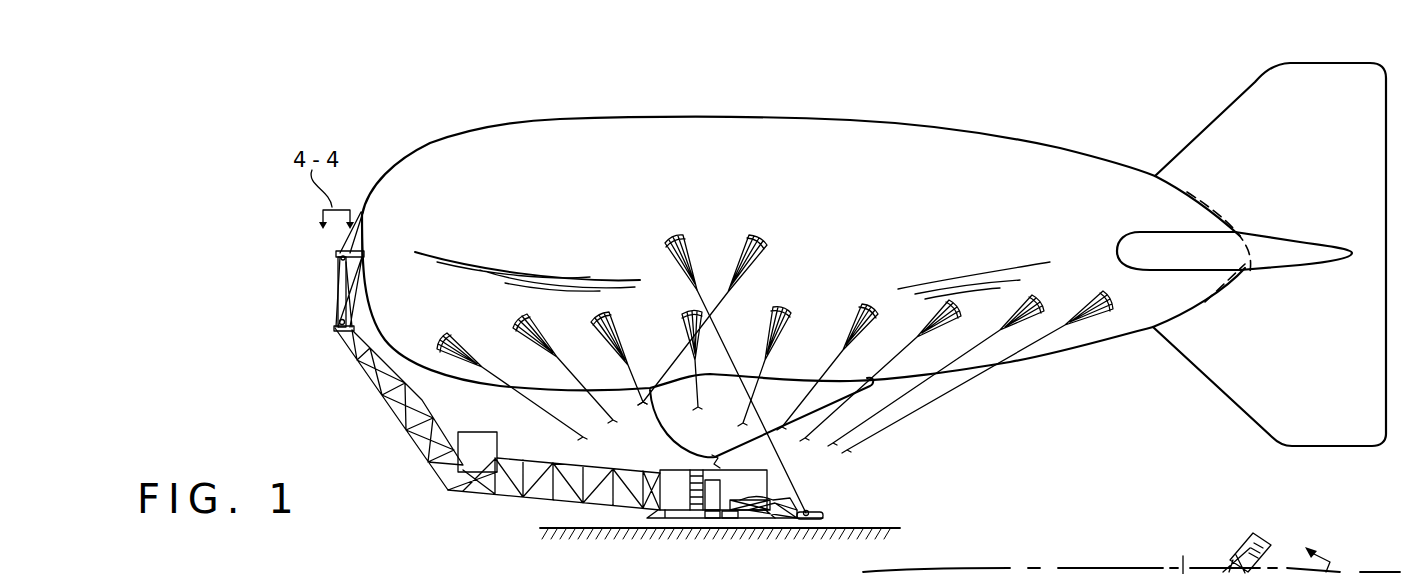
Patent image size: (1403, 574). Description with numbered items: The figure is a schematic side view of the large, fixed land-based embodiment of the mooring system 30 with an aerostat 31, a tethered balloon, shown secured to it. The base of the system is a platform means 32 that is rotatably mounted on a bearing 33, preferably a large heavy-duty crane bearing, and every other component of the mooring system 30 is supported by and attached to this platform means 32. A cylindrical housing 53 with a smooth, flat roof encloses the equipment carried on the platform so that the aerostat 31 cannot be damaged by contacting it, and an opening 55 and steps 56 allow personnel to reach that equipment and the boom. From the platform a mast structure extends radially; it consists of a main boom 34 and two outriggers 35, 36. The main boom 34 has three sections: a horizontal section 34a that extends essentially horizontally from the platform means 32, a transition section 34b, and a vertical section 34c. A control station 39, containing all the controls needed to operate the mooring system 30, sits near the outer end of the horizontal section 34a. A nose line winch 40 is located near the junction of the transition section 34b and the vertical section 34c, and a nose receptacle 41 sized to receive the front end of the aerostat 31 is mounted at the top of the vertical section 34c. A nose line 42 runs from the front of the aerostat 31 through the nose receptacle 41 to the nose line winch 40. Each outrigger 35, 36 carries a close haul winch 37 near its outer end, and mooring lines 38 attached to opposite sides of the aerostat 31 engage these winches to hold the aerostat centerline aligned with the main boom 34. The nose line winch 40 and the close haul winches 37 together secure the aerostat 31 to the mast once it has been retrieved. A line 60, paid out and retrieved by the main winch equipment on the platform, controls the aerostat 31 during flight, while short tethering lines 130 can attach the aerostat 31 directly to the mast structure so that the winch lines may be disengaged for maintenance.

The mooring system 30 is at (340, 383).
The aerostat 31 is at (1023, 163).
The platform means 32 is at (667, 516).
The bearing 33 is at (722, 520).
The main boom 34 is at (468, 495).
The horizontal section 34a is at (540, 503).
The transition section 34b is at (397, 418).
The vertical section 34c is at (343, 300).
The outrigger 35 is at (1180, 556).
The outrigger 36 is at (790, 502).
The close haul winch 37 is at (822, 515).
The mooring lines 38 is at (793, 482).
The control station 39 is at (473, 452).
The nose line winch 40 is at (340, 333).
The nose receptacle 41 is at (363, 212).
The nose line 42 is at (339, 323).
The cylindrical housing 53 is at (668, 464).
The opening 55 is at (748, 520).
The steps 56 is at (700, 522).
The line 60 is at (714, 458).
The short tethering lines 130 is at (533, 403).